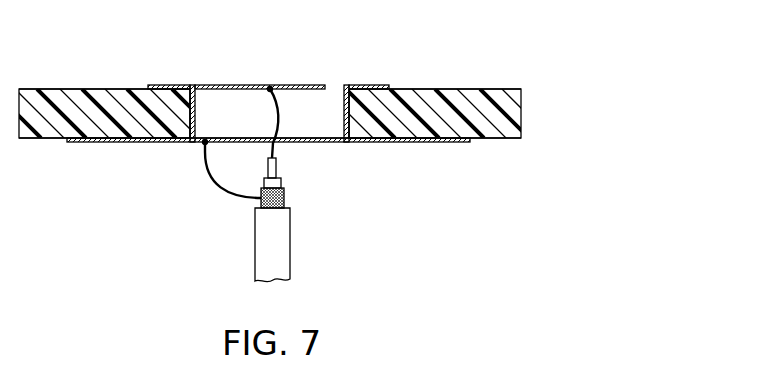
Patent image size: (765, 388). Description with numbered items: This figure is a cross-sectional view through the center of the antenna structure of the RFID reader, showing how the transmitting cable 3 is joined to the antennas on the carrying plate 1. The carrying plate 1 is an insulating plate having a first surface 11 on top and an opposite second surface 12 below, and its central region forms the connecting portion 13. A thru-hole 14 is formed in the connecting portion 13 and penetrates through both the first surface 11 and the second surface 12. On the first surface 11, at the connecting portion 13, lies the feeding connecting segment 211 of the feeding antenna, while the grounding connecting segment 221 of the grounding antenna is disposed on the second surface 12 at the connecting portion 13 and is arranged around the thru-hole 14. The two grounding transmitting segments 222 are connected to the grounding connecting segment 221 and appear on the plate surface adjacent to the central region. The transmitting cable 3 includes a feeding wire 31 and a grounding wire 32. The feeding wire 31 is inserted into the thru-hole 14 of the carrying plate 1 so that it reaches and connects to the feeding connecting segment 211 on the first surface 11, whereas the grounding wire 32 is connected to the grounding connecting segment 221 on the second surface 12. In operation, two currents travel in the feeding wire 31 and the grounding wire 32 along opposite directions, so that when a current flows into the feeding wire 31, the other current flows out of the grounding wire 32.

The carrying plate 1 is at (287, 114).
The first surface 11 is at (490, 89).
The second surface 12 is at (488, 138).
The connecting portion 13 is at (380, 120).
The thru-hole 14 is at (311, 104).
The feeding connecting segment 211 is at (247, 85).
The grounding connecting segment 221 is at (127, 142).
The grounding transmitting segments 222 is at (171, 85).
The transmitting cable 3 is at (275, 184).
The feeding wire 31 is at (278, 167).
The grounding wire 32 is at (303, 204).